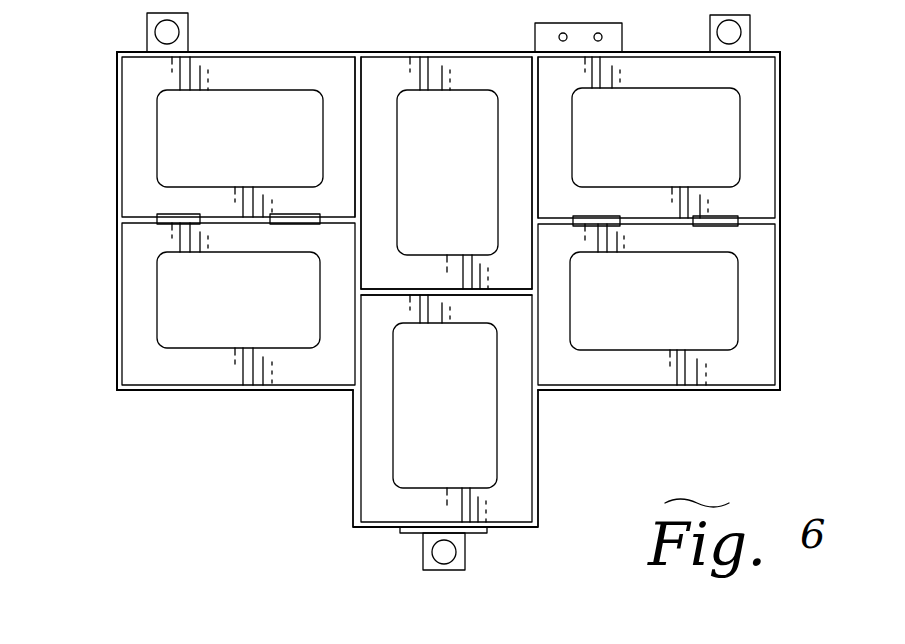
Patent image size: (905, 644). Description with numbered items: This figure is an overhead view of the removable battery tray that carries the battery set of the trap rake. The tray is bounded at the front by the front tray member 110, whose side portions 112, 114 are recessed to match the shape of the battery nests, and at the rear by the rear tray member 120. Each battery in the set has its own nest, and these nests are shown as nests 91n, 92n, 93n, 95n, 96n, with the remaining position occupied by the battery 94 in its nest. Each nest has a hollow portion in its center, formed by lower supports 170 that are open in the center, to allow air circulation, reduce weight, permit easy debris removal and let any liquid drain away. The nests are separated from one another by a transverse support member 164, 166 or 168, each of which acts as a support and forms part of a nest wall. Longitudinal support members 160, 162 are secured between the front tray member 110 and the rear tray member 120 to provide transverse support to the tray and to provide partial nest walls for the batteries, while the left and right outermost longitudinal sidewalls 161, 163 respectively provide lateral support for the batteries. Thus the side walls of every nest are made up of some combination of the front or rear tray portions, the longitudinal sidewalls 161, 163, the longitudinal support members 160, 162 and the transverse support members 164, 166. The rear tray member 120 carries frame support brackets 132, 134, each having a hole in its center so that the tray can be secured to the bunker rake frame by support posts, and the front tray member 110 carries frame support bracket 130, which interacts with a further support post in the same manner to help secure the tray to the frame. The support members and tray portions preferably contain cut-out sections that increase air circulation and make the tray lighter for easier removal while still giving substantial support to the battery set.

The front tray member 110 is at (393, 530).
The side portion 112 is at (230, 391).
The side portion 114 is at (702, 390).
The rear tray member 120 is at (460, 50).
The frame support bracket 130 is at (466, 553).
The frame support bracket 132 is at (188, 25).
The frame support bracket 134 is at (710, 28).
The longitudinal support member 160 is at (362, 135).
The left outermost longitudinal sidewall 161 is at (117, 200).
The longitudinal support member 162 is at (538, 134).
The right outermost longitudinal sidewall 163 is at (781, 204).
The transverse support member 164 is at (217, 218).
The transverse support member 166 is at (635, 218).
The transverse support member 168 is at (383, 288).
The lower support 170 is at (483, 64).
The battery nest 91n is at (284, 147).
The battery nest 92n is at (284, 309).
The battery nest 93n is at (482, 193).
The battery 94 is at (456, 395).
The battery nest 95n is at (736, 147).
The battery nest 96n is at (692, 302).